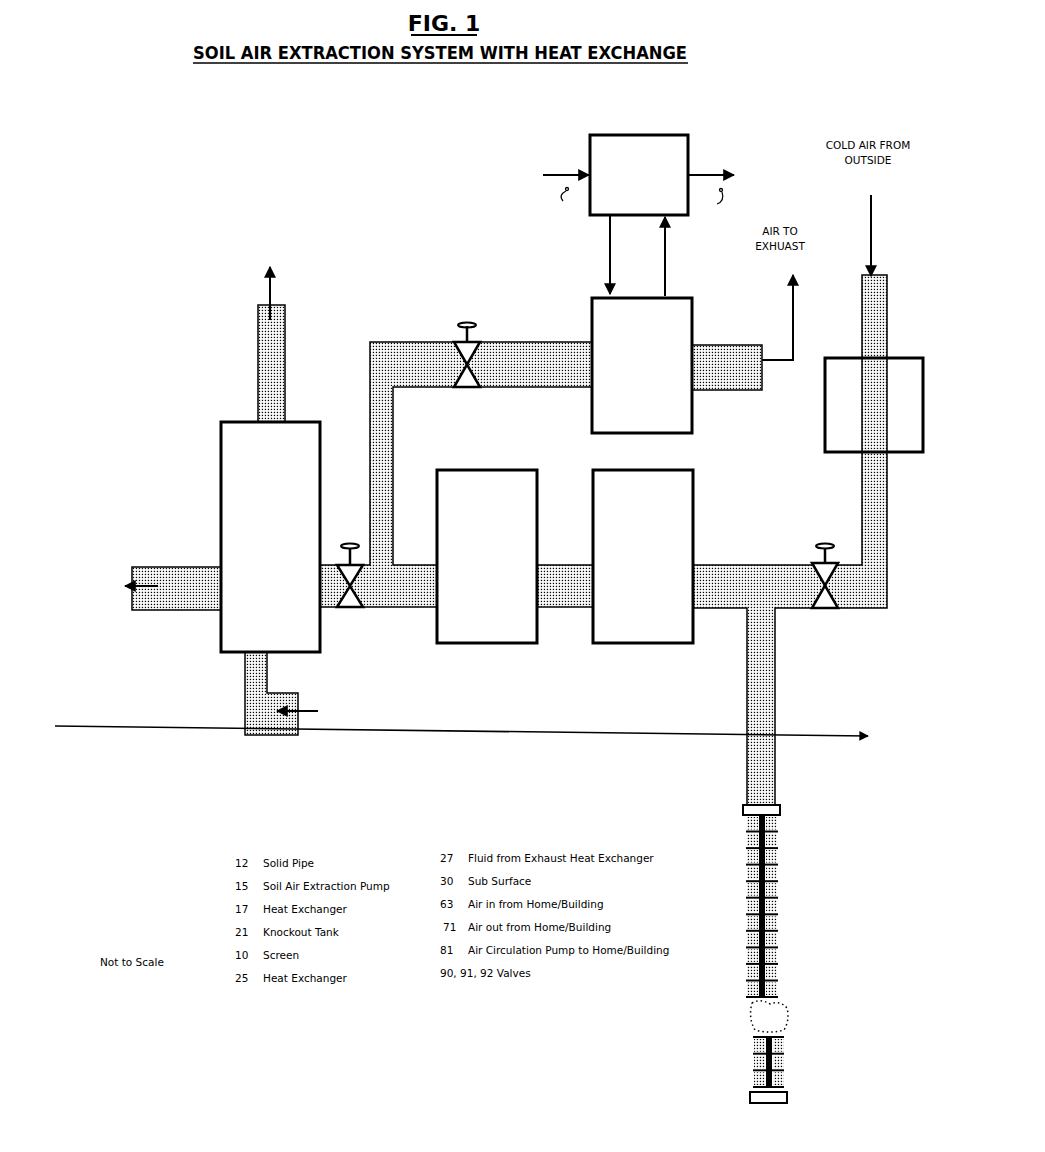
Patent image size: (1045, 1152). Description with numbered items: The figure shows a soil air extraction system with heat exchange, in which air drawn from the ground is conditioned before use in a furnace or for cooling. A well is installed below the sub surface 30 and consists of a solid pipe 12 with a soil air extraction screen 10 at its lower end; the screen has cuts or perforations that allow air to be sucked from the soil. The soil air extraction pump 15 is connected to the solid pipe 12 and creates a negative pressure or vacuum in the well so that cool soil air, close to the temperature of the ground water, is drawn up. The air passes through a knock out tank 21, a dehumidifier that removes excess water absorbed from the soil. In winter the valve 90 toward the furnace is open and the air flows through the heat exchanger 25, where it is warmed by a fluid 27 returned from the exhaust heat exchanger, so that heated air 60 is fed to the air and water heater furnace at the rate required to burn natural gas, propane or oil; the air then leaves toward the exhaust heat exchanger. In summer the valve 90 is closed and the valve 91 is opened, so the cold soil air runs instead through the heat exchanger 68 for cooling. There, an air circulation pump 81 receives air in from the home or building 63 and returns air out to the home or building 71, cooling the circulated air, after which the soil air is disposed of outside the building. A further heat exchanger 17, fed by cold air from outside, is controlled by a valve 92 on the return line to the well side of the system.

The soil air extraction screen 10 is at (746, 884).
The solid plastic pipe 12 is at (748, 776).
The soil air extraction pump 15 is at (636, 652).
The Heat Exchanger 17 is at (826, 406).
The knock out tank 21 is at (486, 646).
The heat exchanger 25 is at (219, 466).
The Fluid from Exhaust Heat Exchanger 27 is at (378, 701).
The Sub Surface 30 is at (254, 752).
The heated air 60 is at (99, 553).
The Air in from Home/Building 63 is at (605, 249).
The heat exchanger 68 is at (587, 319).
The Air out from Home/Building 71 is at (673, 250).
The Air Circulation Pump to Home/Building 81 is at (677, 130).
The valve 90 is at (357, 538).
The valve 91 is at (474, 321).
The Valve 92 is at (834, 539).